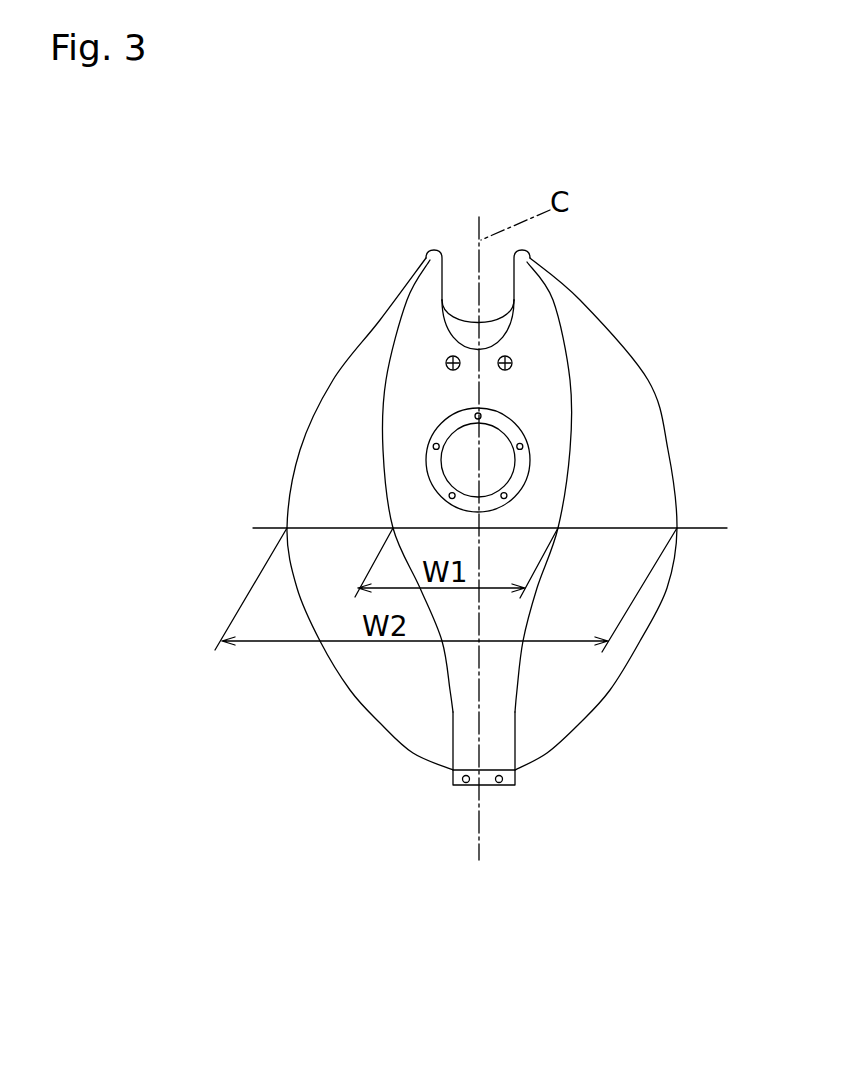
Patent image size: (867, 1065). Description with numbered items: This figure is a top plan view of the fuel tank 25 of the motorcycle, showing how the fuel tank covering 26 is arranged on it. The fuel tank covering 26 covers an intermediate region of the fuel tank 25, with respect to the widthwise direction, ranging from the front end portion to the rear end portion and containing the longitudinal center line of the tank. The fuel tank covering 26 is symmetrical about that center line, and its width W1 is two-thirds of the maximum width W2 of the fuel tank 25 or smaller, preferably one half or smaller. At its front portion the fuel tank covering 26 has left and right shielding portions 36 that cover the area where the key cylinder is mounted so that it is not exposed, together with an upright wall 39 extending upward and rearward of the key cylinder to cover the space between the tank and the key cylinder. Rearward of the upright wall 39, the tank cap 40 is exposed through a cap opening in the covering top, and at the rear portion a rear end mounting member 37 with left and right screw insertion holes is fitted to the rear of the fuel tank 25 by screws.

The fuel tank 25 is at (615, 400).
The fuel tank covering 26 is at (548, 365).
The shielding portions 36 is at (430, 262).
The rear end mounting member 37 is at (462, 787).
The upright wall 39 is at (457, 325).
The tank cap 40 is at (440, 476).